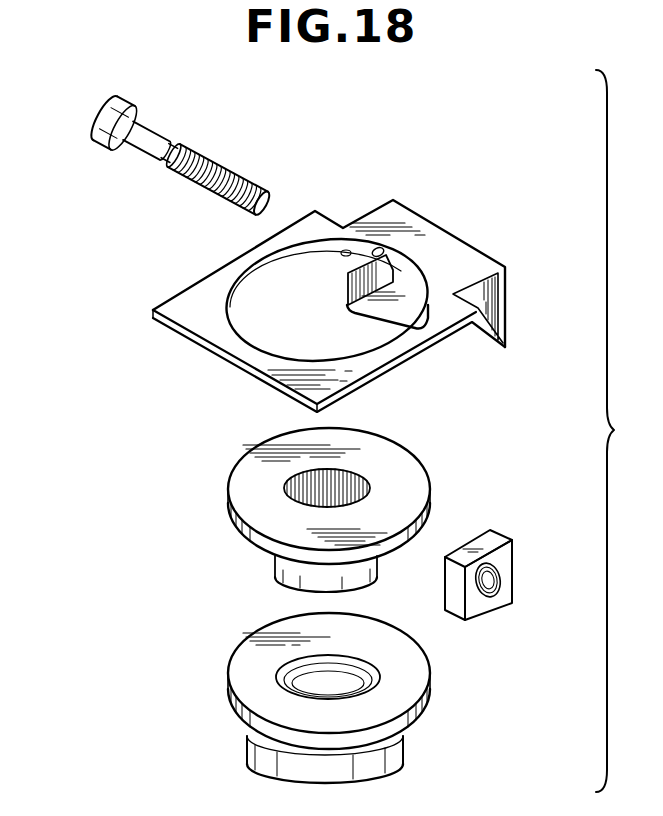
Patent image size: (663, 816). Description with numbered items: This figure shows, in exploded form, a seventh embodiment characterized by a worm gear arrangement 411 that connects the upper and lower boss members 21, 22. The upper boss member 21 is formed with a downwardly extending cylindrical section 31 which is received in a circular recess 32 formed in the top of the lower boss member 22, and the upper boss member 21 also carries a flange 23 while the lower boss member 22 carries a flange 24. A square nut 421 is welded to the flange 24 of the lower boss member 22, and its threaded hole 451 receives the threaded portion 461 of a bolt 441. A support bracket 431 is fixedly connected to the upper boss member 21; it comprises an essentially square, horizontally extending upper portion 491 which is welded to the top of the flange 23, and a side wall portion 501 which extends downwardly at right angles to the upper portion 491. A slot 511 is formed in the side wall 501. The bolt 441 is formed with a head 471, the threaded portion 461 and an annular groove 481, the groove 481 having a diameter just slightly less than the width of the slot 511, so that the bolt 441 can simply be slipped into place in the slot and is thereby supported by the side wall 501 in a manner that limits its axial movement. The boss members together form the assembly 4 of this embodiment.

The disc assembly 4 is at (276, 608).
The upper boss member 21 is at (277, 522).
The lower boss member 22 is at (308, 701).
The flange 23 is at (226, 487).
The flange 24 is at (225, 713).
The cylindrical section 31 is at (367, 570).
The circular recess 32 is at (336, 664).
The worm gear arrangement 411 is at (333, 243).
The square nut 421 is at (522, 606).
The support bracket 431 is at (480, 237).
The bolt 441 is at (219, 149).
The threaded hole of nut 451 is at (488, 597).
The threaded portion 461 is at (290, 132).
The head 471 is at (113, 122).
The annular groove 481 is at (169, 153).
The upper portion 491 is at (182, 298).
The side wall portion 501 is at (340, 297).
The slot 511 is at (340, 267).